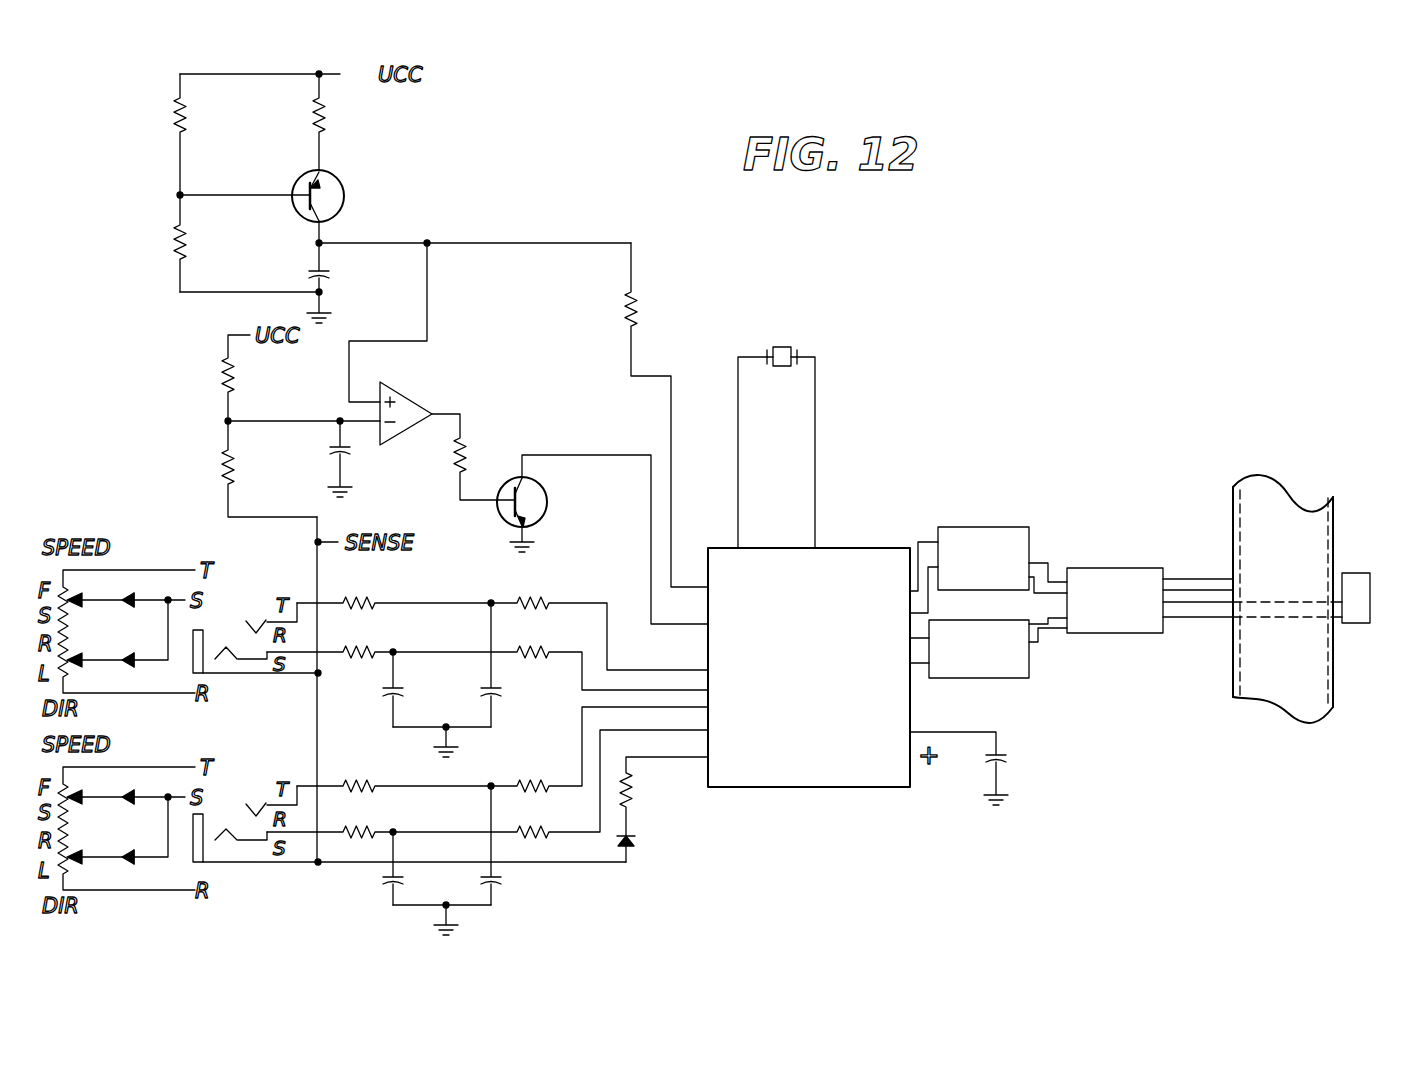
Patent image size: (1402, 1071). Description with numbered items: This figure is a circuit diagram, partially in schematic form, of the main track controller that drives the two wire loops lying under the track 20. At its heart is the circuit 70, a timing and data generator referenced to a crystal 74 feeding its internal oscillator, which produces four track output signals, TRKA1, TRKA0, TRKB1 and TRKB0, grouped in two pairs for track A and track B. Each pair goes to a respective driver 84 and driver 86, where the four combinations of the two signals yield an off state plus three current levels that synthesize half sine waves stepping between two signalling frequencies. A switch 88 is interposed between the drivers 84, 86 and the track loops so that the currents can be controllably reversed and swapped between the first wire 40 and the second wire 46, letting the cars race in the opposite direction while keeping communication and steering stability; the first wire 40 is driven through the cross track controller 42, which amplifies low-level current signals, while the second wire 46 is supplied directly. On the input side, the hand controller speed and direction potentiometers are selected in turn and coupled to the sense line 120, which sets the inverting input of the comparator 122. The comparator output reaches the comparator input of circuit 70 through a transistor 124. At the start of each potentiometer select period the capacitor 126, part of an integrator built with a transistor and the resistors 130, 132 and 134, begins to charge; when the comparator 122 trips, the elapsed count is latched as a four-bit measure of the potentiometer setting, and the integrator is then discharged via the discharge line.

The track 20 is at (1248, 520).
The first wire 40 is at (1337, 518).
The cross track controller 42 is at (1356, 573).
The second wire 46 is at (1228, 518).
The circuit 70 is at (778, 547).
The crystal 74 is at (785, 347).
The driver 84 is at (966, 527).
The driver 86 is at (968, 678).
The switch 88 is at (1110, 568).
The sense line 120 is at (276, 519).
The comparator 122 is at (428, 381).
The transistor 124 is at (500, 521).
The capacitor 126 is at (312, 279).
The resistor 130 is at (176, 242).
The resistor 132 is at (175, 110).
The resistor 134 is at (337, 116).